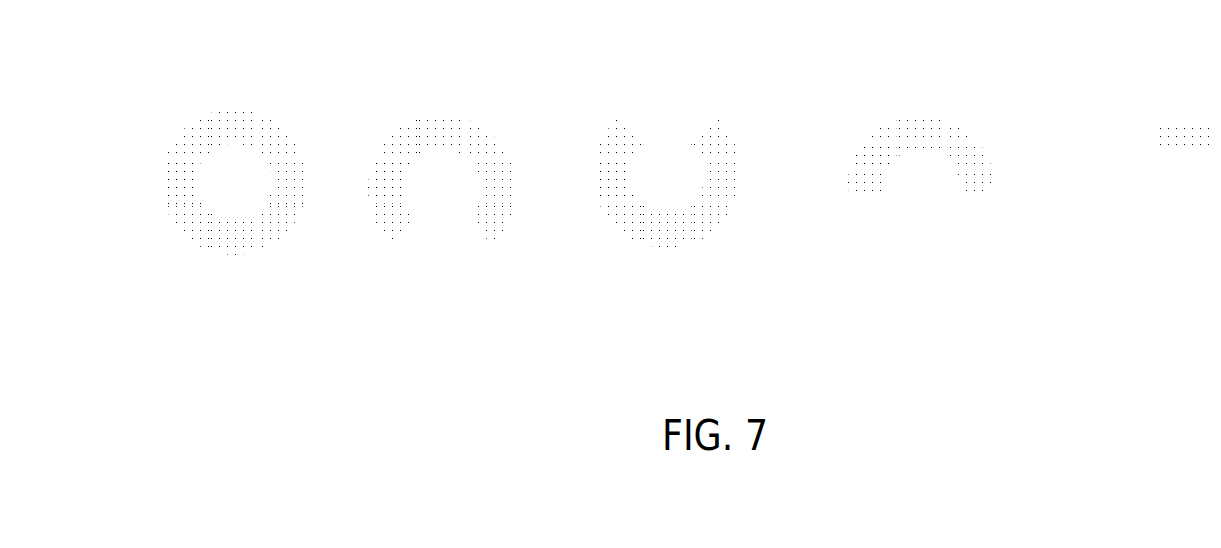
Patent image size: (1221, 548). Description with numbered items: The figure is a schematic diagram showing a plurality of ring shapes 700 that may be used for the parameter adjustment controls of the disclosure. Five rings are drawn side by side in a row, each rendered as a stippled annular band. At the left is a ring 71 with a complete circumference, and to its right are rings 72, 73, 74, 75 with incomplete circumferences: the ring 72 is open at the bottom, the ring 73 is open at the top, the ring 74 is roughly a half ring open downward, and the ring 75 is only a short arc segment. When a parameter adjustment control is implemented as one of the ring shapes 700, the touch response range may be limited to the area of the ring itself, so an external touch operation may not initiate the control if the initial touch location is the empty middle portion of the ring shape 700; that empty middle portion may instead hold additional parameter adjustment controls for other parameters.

The ring shapes 700 is at (243, 73).
The ring 71 is at (202, 247).
The ring 72 is at (380, 223).
The ring 73 is at (618, 225).
The ring 74 is at (863, 190).
The ring 75 is at (1177, 143).